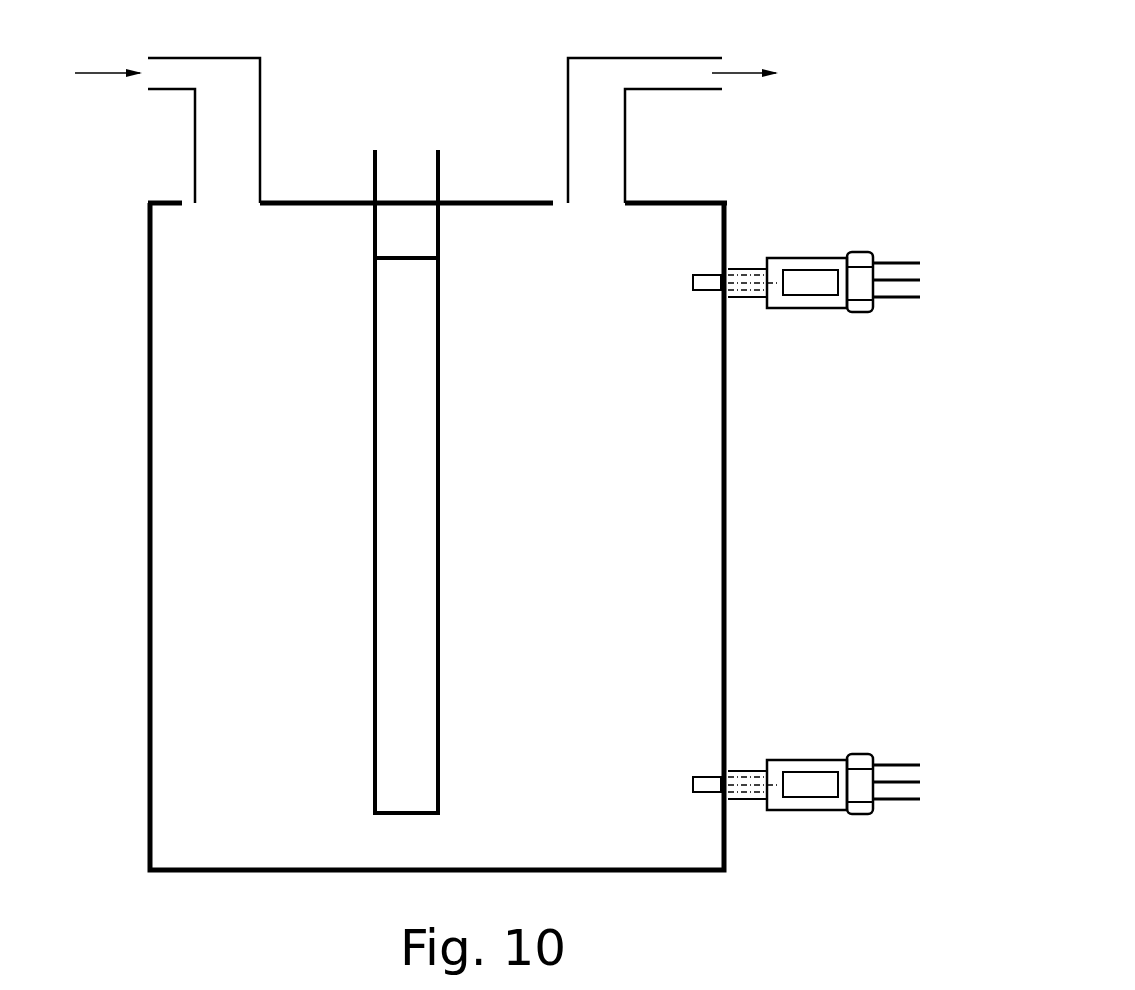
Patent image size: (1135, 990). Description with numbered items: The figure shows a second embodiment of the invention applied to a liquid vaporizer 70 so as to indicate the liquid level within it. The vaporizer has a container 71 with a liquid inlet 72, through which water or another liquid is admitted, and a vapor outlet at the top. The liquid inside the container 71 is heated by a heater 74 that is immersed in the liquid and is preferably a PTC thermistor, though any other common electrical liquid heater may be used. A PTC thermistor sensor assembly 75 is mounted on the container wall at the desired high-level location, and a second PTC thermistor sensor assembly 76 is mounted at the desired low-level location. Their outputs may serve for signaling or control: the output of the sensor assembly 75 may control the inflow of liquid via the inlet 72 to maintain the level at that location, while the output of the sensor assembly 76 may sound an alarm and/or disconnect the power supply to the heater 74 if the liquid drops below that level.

The liquid vaporizer 70 is at (767, 170).
The container 71 is at (727, 520).
The liquid inlet 72 is at (262, 118).
The heater 74 is at (440, 463).
The PTC thermistor sensor assembly 75 is at (818, 258).
The second PTC thermistor sensor assembly 76 is at (797, 760).